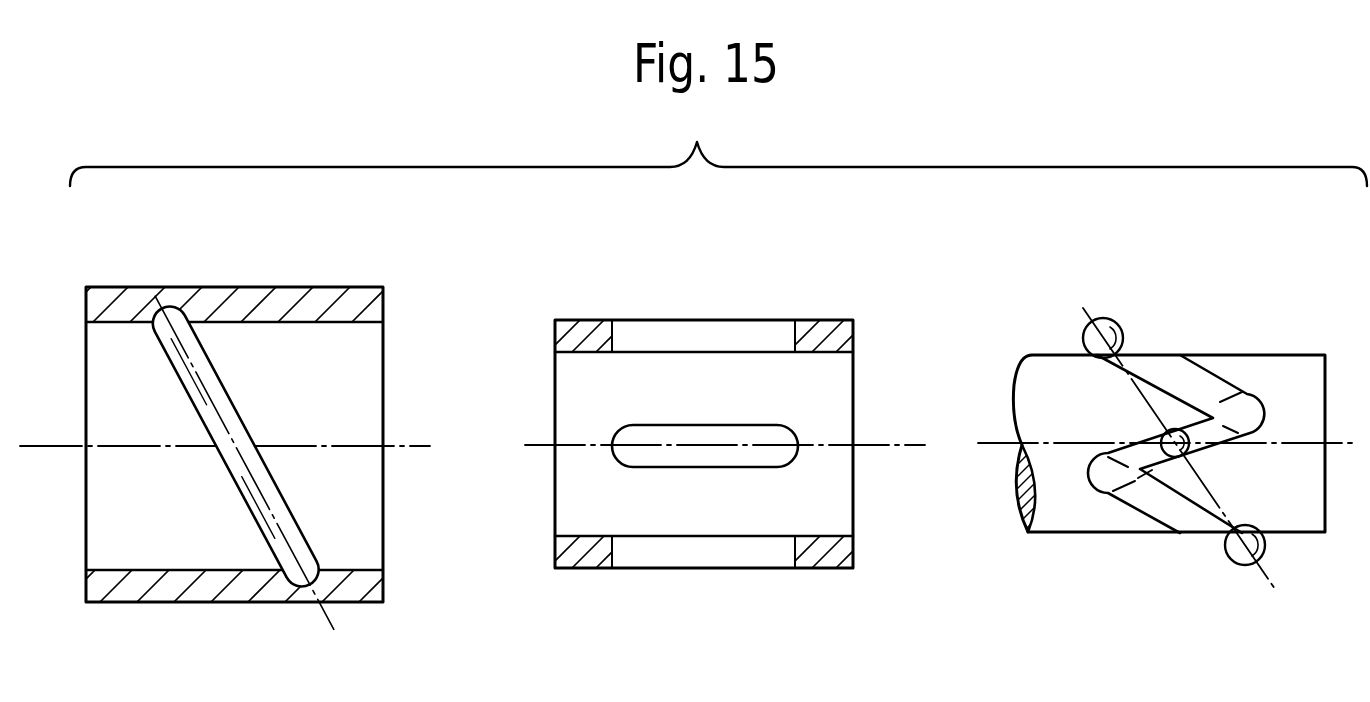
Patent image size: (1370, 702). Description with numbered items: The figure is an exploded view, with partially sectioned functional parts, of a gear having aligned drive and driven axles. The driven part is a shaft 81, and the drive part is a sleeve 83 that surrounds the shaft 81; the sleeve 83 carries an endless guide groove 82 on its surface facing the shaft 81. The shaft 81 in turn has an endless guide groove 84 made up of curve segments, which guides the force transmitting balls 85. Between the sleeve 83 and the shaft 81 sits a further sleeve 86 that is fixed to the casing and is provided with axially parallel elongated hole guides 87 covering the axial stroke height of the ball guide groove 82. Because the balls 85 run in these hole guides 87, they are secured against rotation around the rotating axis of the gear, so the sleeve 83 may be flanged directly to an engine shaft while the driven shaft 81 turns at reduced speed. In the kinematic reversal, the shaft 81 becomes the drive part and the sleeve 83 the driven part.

The shaft 81 is at (1295, 358).
The endless guide groove 82 is at (193, 327).
The sleeve 83 is at (338, 388).
The endless guide groove 84 is at (1187, 378).
The force transmitting balls 85 is at (1126, 300).
The sleeve 86 is at (586, 326).
The elongated hole guides 87 is at (713, 329).